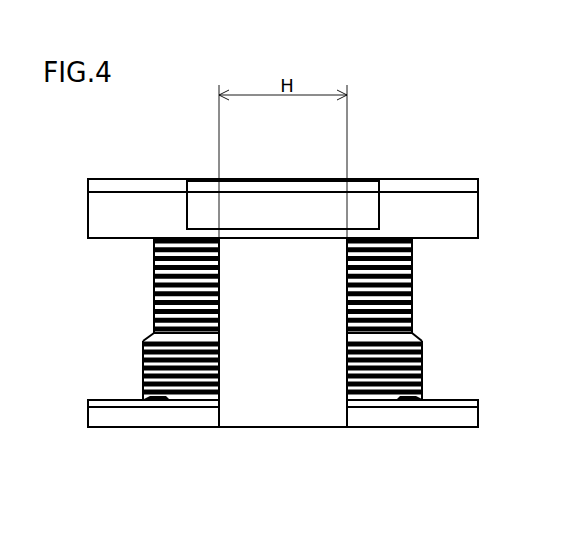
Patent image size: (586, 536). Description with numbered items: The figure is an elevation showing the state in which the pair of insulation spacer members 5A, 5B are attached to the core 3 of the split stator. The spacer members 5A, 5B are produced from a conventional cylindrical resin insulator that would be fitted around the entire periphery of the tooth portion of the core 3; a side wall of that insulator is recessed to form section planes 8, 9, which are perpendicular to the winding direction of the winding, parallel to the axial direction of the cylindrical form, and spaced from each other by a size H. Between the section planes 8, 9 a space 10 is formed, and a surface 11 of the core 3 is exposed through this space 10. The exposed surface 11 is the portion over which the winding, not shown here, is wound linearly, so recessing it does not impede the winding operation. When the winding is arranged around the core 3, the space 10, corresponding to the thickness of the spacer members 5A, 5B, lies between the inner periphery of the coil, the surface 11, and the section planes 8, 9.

The core 3 is at (358, 178).
The insulation spacer member 5A is at (147, 427).
The insulation spacer member 5B is at (427, 427).
The section plane 8 is at (220, 380).
The section plane 9 is at (345, 380).
The space 10 is at (280, 393).
The surface of core 11 is at (297, 318).